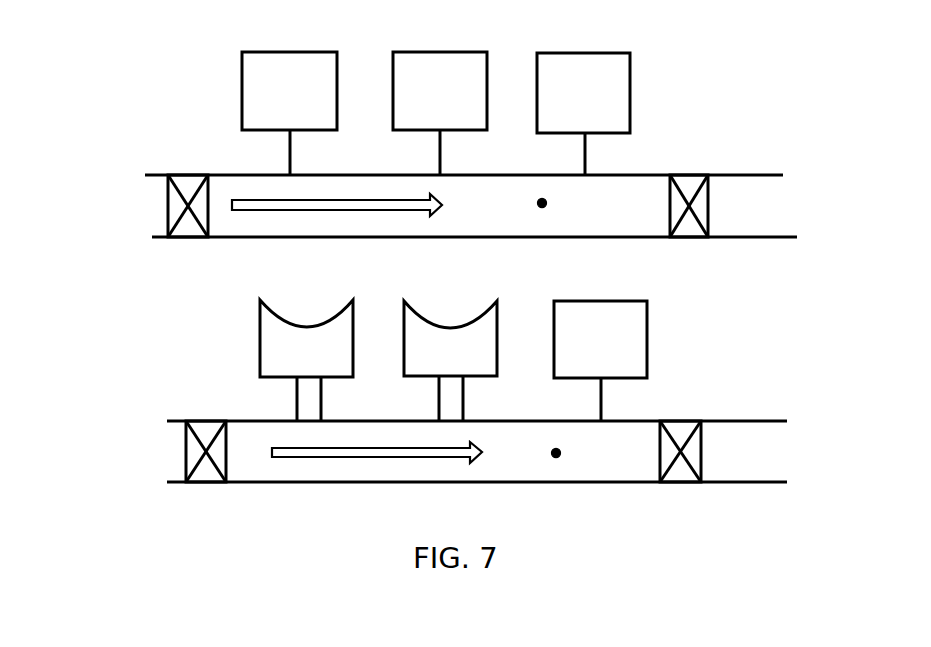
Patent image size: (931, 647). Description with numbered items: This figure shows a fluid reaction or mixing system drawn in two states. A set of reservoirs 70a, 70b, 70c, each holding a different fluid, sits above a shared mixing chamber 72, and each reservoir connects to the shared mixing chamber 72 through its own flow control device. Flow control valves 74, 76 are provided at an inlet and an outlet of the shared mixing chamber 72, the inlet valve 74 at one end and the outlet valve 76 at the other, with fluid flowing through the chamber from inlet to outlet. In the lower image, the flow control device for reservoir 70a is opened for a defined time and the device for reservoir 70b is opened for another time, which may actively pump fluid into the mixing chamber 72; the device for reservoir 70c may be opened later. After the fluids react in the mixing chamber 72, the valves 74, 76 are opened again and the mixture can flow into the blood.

The reservoir 70a is at (242, 87).
The reservoir 70b is at (485, 76).
The reservoir 70c is at (630, 100).
The shared mixing chamber 72 is at (542, 207).
The flow control valve 74 is at (168, 208).
The flow control valve 76 is at (708, 200).